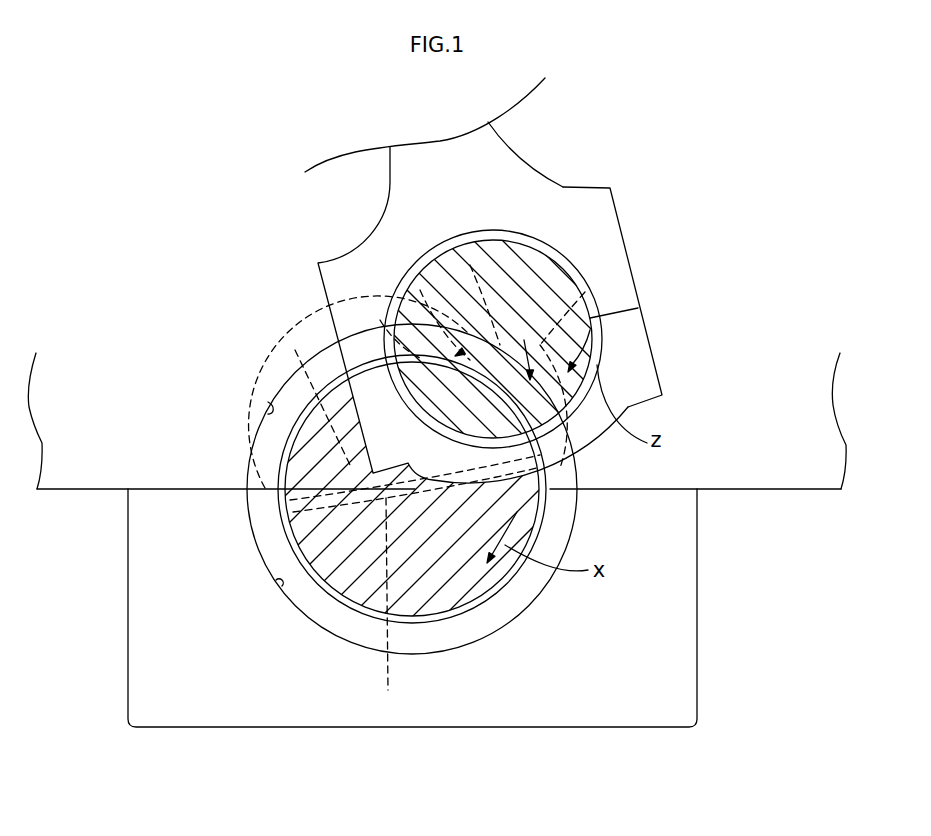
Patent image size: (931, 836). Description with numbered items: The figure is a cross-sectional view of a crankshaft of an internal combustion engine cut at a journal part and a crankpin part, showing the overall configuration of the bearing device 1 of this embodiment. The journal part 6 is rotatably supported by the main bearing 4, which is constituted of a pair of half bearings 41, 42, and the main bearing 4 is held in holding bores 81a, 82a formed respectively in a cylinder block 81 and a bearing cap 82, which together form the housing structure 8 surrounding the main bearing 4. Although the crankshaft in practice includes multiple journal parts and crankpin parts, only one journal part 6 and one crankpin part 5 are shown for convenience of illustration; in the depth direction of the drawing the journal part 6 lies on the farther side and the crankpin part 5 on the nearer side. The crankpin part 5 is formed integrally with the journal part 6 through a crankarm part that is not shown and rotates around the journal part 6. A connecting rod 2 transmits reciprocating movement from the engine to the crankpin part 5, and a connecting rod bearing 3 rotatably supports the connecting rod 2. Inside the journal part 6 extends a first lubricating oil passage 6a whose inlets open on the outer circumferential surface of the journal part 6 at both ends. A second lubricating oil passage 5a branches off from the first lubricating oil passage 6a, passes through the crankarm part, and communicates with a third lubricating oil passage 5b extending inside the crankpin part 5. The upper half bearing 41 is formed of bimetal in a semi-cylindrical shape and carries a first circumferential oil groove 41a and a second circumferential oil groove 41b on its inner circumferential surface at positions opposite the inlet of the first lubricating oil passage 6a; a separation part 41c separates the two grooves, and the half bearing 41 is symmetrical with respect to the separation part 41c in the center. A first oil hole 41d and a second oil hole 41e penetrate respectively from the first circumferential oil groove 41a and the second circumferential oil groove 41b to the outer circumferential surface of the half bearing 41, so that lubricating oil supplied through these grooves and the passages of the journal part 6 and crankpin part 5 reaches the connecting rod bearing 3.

The bearing device 1 is at (123, 200).
The connecting rod 2 is at (390, 180).
The connecting rod bearing 3 is at (612, 357).
The main bearing 4 is at (243, 517).
The crankpin part 5 is at (527, 243).
The second lubricating oil passage 5a is at (318, 382).
The third lubricating oil passage 5b is at (470, 265).
The journal part 6 is at (333, 585).
The first lubricating oil passage 6a is at (384, 604).
The base 8 is at (807, 530).
The half bearing 41 is at (255, 436).
The first circumferential oil groove 41a is at (318, 345).
The second circumferential oil groove 41b is at (420, 290).
The separation part 41c is at (380, 320).
The first oil hole 41d is at (290, 369).
The second oil hole 41e is at (585, 292).
The half bearing 42 is at (262, 550).
The cylinder block 81 is at (751, 477).
The holding bore 81a is at (268, 402).
The bearing cap 82 is at (697, 658).
The holding bore 82a is at (280, 586).